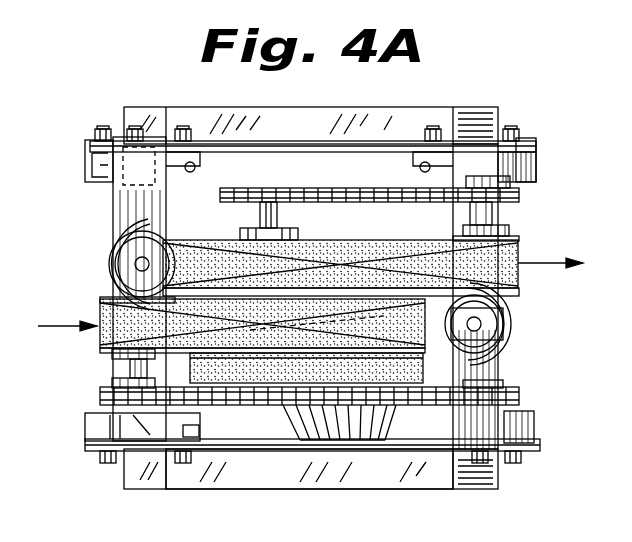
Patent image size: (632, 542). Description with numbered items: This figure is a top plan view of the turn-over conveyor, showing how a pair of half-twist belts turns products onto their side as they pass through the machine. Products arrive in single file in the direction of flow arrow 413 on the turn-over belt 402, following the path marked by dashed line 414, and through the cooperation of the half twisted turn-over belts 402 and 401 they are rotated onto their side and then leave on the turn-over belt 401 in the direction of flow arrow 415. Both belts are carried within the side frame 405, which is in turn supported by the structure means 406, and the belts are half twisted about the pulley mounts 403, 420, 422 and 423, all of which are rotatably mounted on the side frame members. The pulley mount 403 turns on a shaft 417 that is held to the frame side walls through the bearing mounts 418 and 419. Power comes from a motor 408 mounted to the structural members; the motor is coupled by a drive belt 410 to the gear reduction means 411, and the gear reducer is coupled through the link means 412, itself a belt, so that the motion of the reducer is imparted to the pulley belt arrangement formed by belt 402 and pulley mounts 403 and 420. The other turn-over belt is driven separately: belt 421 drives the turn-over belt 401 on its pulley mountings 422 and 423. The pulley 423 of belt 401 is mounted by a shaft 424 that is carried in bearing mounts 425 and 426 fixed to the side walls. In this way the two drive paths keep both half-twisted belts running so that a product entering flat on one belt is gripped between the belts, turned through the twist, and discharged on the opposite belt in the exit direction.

The turn-over belt 401 is at (250, 243).
The turn-over belt 402 is at (143, 336).
The pulley mount 403 is at (105, 296).
The side frame 405 is at (298, 446).
The structure means 406 is at (137, 116).
The motor 408 is at (388, 441).
The drive belt 410 is at (428, 371).
The gear reduction means 411 is at (341, 325).
The link means 412 is at (368, 186).
The flow arrow 413 is at (60, 311).
The dashed line 414 is at (370, 240).
The flow arrow 415 is at (549, 263).
The shaft 417 is at (125, 371).
The bearing mount 418 is at (85, 168).
The bearing mount 419 is at (100, 428).
The pulley mount 420 is at (524, 311).
The belt 421 is at (285, 406).
The pulley mounting 422 is at (115, 240).
The pulley 423 is at (516, 236).
The shaft 424 is at (493, 220).
The bearing mount 425 is at (538, 166).
The bearing mount 426 is at (536, 424).